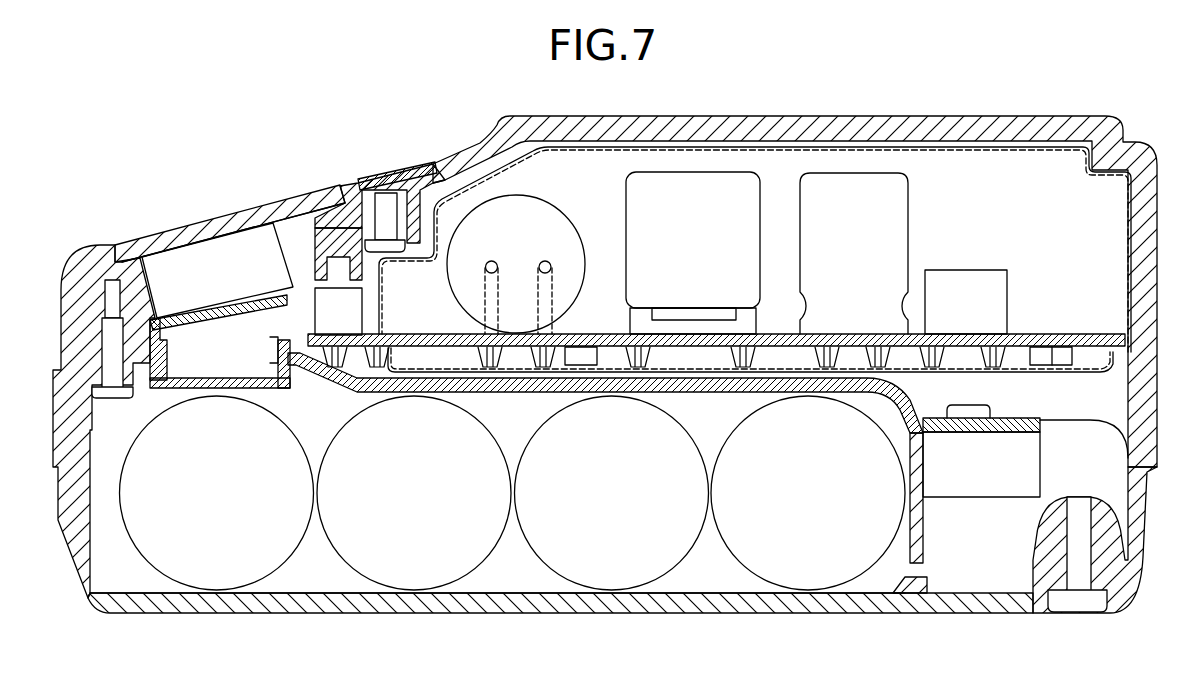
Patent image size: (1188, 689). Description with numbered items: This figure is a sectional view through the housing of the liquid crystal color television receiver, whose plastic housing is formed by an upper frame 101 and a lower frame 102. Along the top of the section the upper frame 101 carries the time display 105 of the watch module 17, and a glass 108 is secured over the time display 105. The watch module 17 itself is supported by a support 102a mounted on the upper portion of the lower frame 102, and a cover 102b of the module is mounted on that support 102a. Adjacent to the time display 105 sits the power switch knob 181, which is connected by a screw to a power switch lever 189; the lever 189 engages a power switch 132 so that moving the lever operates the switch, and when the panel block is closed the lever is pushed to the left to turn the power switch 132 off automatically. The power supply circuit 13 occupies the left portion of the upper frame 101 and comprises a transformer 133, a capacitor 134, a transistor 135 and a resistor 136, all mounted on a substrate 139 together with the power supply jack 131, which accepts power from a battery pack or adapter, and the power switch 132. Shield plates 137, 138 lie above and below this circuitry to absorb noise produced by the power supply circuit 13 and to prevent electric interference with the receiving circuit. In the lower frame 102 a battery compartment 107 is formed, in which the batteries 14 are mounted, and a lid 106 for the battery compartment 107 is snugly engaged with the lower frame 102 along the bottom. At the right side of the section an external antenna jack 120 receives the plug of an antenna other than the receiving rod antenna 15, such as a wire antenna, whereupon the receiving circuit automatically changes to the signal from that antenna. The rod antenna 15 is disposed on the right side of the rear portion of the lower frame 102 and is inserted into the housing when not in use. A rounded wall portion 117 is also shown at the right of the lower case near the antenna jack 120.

The power supply circuit 13 is at (583, 342).
The batteries 14 is at (364, 560).
The receiving rod antenna 15 is at (1113, 536).
The watch module 17 is at (170, 263).
The upper frame 101 is at (732, 127).
The lower frame 102 is at (72, 430).
The support 102a is at (240, 303).
The cover 102b is at (280, 380).
The time display 105 is at (237, 232).
The lid 106 is at (512, 604).
The battery compartment 107 is at (705, 584).
The glass 108 is at (168, 232).
The rounded wall portion 117 is at (1114, 438).
The external antenna jack 120 is at (1040, 478).
The power supply jack 131 is at (1000, 292).
The power switch 132 is at (355, 312).
The transformer 133 is at (632, 214).
The capacitor 134 is at (904, 220).
The transistor 135 is at (570, 365).
The resistor 136 is at (1043, 358).
The shield plate 137 is at (970, 147).
The shield plate 138 is at (962, 372).
The substrate 139 is at (1060, 350).
The power switch knob 181 is at (403, 172).
The power switch lever 189 is at (328, 235).